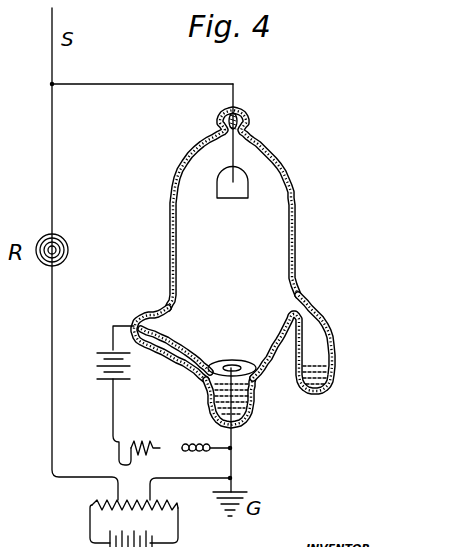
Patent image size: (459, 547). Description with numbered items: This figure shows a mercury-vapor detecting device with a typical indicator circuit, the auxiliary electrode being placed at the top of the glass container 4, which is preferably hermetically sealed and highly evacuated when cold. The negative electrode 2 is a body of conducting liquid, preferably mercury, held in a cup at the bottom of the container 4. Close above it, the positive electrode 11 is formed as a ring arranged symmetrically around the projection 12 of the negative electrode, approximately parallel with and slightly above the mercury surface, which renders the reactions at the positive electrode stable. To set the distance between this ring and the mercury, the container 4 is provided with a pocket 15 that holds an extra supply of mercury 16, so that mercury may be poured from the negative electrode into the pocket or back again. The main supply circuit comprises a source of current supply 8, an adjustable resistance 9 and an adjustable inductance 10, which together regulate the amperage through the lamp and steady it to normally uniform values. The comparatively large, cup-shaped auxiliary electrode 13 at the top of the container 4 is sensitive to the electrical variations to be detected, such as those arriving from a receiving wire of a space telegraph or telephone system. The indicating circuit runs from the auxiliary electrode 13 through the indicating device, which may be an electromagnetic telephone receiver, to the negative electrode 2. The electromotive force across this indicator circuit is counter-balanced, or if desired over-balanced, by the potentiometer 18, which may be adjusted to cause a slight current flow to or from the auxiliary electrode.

The negative electrode 2 is at (252, 397).
The glass bulb envelope 4 is at (296, 226).
The source of current supply 8 is at (122, 395).
The adjustable resistance 9 is at (145, 438).
The adjustable inductance 10 is at (206, 434).
The positive electrode 11 is at (240, 361).
The projection of the negative electrode 12 is at (203, 384).
The auxiliary electrode 13 is at (232, 141).
The pocket 15 is at (332, 342).
The extra supply of mercury 16 is at (318, 394).
The potentiometer 18 is at (134, 523).